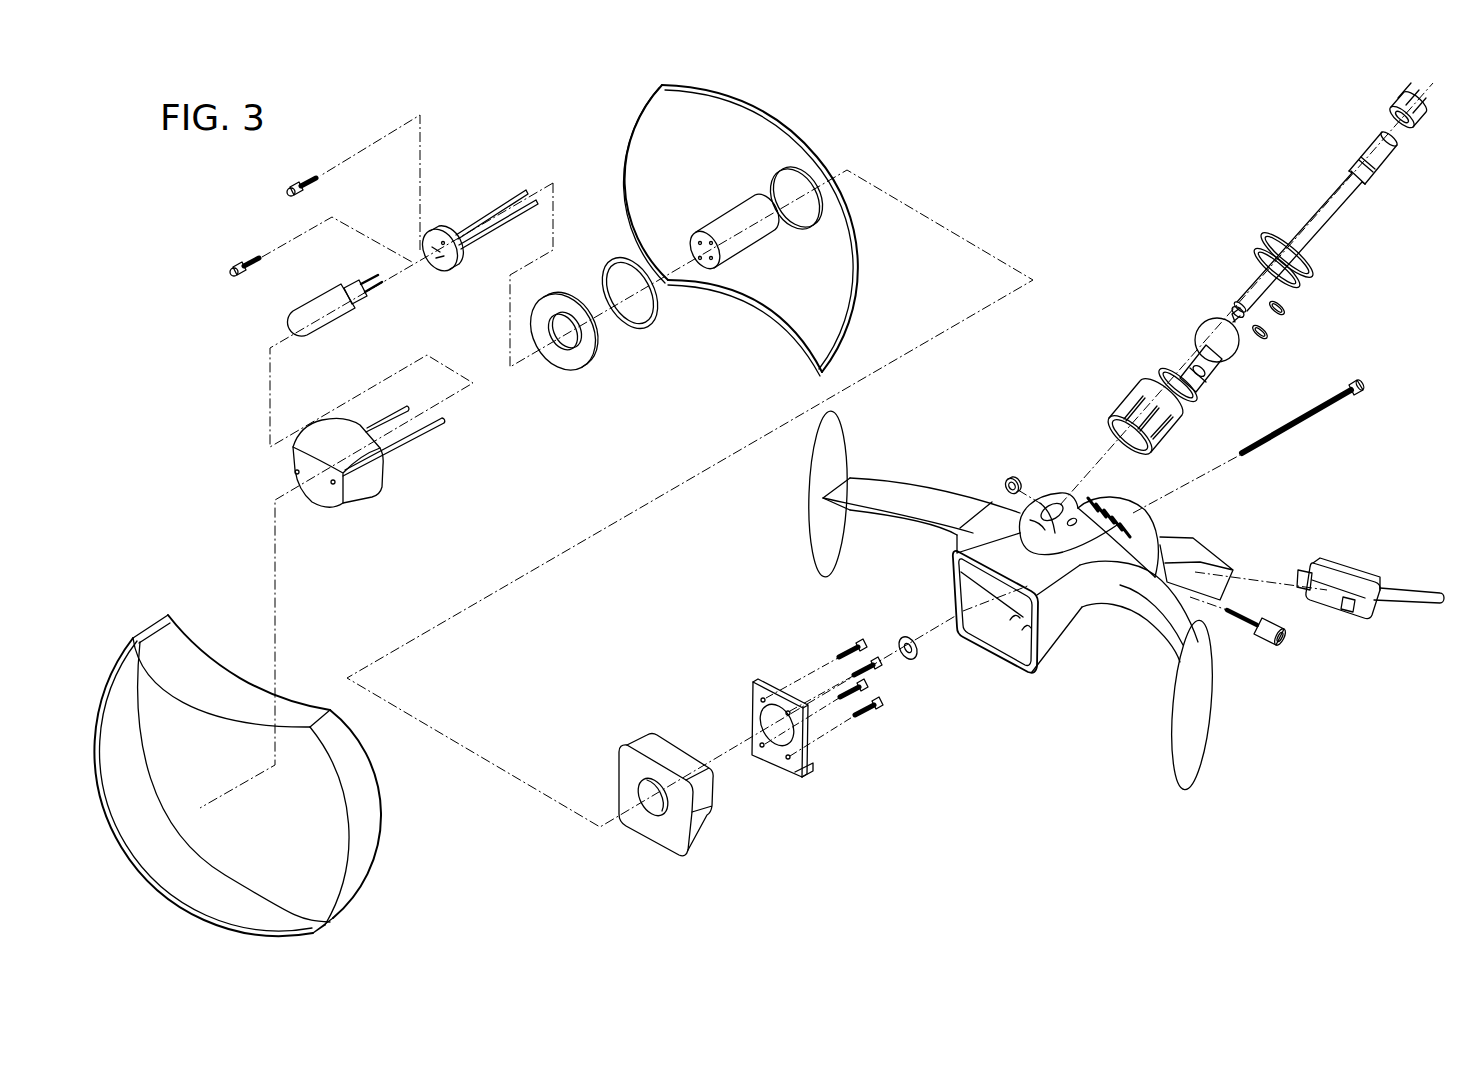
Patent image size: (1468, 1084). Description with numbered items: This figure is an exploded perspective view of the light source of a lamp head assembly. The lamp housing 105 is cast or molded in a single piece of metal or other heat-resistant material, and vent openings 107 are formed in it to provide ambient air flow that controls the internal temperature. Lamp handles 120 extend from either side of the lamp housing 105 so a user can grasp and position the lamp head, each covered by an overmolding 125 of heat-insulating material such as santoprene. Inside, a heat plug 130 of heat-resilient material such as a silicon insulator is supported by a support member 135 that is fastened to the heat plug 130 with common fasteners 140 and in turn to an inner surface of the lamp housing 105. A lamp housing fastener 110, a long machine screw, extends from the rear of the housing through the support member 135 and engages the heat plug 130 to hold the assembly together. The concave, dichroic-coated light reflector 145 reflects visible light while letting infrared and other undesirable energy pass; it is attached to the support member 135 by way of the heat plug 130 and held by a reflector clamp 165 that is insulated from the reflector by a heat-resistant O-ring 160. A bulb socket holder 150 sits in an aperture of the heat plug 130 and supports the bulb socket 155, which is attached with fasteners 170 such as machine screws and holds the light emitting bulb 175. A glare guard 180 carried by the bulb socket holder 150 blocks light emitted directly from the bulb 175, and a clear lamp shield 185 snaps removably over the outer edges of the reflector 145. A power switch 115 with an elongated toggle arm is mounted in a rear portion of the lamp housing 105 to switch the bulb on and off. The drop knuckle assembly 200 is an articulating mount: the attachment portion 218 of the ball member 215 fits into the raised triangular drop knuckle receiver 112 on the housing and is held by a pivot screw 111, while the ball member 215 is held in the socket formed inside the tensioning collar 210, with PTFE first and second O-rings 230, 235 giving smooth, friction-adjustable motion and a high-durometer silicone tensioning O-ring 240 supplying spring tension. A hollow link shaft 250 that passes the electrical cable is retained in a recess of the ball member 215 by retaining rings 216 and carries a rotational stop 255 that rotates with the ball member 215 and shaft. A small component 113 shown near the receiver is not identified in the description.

The lamp housing 105 is at (1055, 662).
The vent openings 107 is at (1110, 508).
The lamp housing fastener 110 is at (1330, 413).
The pivot screw 111 is at (1290, 642).
The drop knuckle receiver 112 is at (1057, 490).
The nut 113 is at (1006, 479).
The power switch 115 is at (1342, 570).
The lamp handles 120 is at (850, 452).
The overmolding 125 is at (925, 483).
The heat plug 130 is at (713, 821).
The support member 135 is at (815, 772).
The fasteners 140 is at (875, 708).
The light reflector 145 is at (780, 110).
The bulb socket holder 150 is at (720, 214).
The bulb socket 155 is at (447, 270).
The O-ring 160 is at (658, 332).
The reflector clamp 165 is at (578, 372).
The fasteners 170 is at (302, 183).
The light emitting bulb 175 is at (322, 318).
The glare guard 180 is at (368, 490).
The lamp shield 185 is at (385, 828).
The drop knuckle assembly 200 is at (1225, 272).
The tensioning collar 210 is at (1130, 405).
The ball member 215 is at (1218, 318).
The retaining rings 216 is at (1270, 334).
The attachment portion 218 is at (1182, 362).
The first O-ring 230 is at (1200, 385).
The second O-ring 235 is at (1300, 280).
The tensioning O-ring 240 is at (1310, 263).
The link shaft 250 is at (1342, 176).
The rotational stop 255 is at (1390, 98).